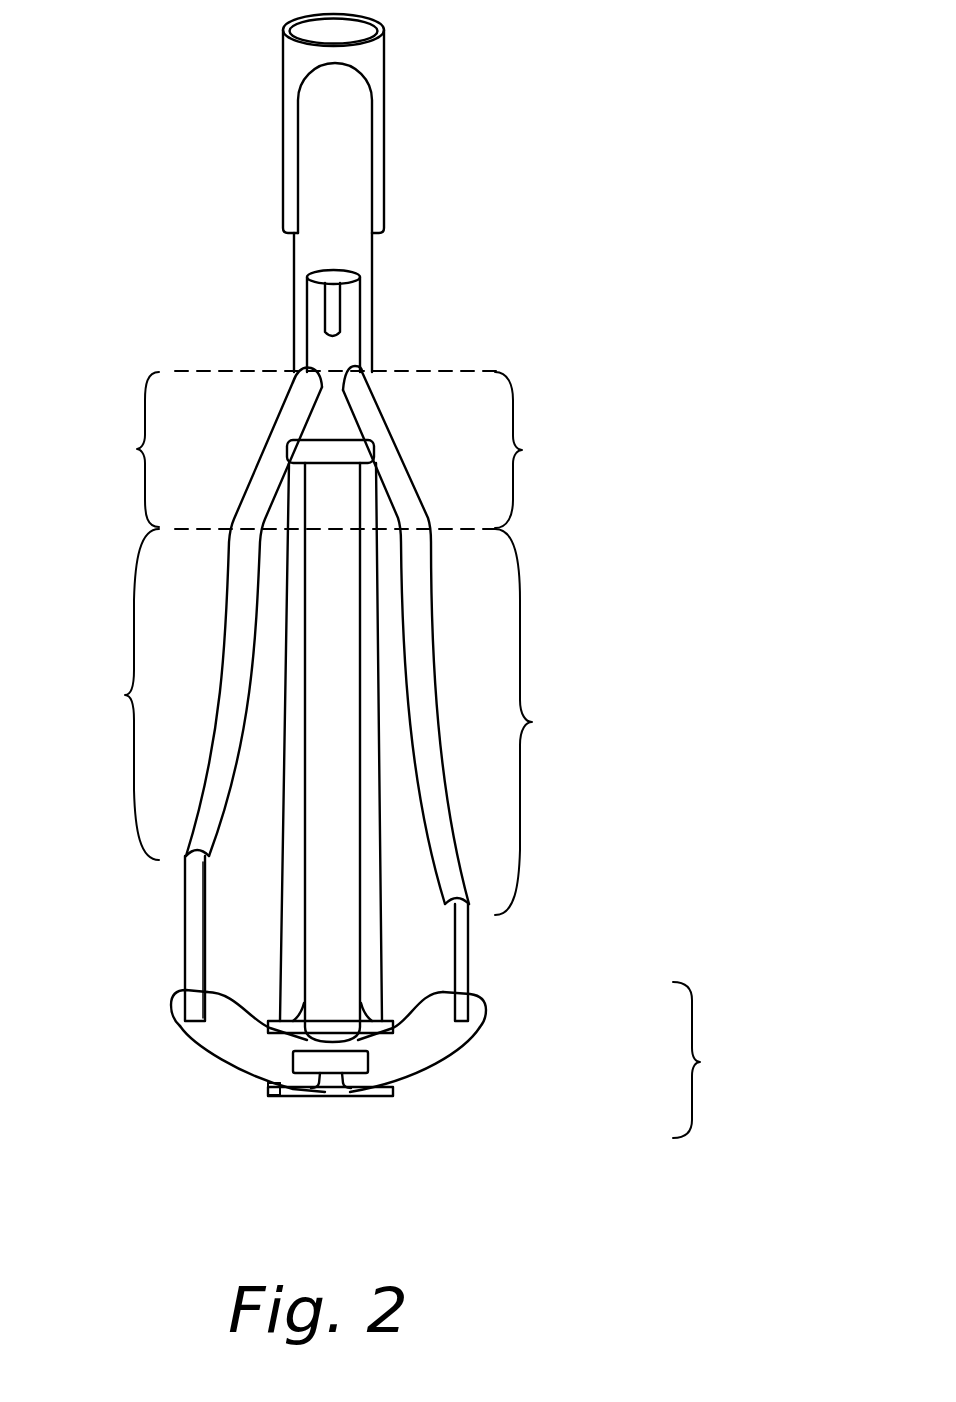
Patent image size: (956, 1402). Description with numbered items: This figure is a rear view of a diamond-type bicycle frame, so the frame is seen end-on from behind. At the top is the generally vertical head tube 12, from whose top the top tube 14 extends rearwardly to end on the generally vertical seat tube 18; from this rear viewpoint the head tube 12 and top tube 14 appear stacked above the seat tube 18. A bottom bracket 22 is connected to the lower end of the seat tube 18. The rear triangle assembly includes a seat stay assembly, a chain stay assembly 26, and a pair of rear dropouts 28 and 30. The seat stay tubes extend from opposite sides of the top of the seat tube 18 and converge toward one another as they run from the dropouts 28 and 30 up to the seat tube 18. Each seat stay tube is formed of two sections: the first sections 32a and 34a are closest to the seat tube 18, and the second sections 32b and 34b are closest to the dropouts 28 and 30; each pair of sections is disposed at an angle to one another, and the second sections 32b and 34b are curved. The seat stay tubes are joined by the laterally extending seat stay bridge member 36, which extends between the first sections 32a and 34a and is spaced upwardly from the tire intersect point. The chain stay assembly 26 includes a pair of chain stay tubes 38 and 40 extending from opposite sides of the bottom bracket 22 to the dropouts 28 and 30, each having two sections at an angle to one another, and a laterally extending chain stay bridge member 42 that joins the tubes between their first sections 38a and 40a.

The head tube 12 is at (405, 76).
The top tube 14 is at (395, 265).
The seat tube 18 is at (367, 342).
The bottom bracket 22 is at (267, 1087).
The chain stay assembly 26 is at (705, 1060).
The rear dropout 28 is at (467, 945).
The rear dropout 30 is at (185, 972).
The first section of seat stay tube 32a is at (532, 450).
The second section of seat stay tube 32b is at (539, 722).
The first section of seat stay tube 34a is at (122, 449).
The second section of seat stay tube 34b is at (116, 694).
The seat stay bridge member 36 is at (352, 449).
The chain stay tube 38 is at (505, 1014).
The first section of chain stay tube 38a is at (367, 1070).
The chain stay tube 40 is at (305, 1112).
The first section of chain stay tube 40a is at (277, 1097).
The chain stay bridge member 42 is at (357, 1090).